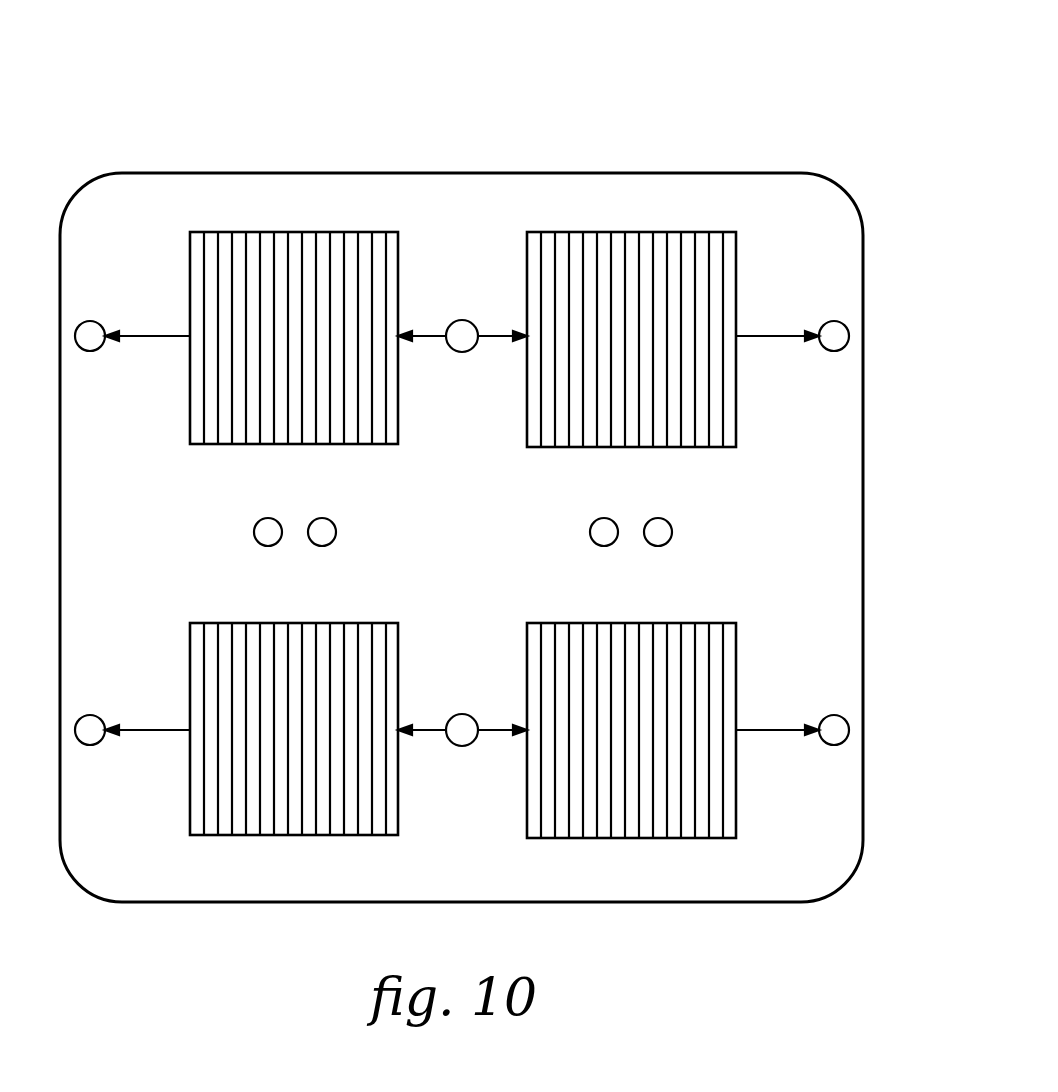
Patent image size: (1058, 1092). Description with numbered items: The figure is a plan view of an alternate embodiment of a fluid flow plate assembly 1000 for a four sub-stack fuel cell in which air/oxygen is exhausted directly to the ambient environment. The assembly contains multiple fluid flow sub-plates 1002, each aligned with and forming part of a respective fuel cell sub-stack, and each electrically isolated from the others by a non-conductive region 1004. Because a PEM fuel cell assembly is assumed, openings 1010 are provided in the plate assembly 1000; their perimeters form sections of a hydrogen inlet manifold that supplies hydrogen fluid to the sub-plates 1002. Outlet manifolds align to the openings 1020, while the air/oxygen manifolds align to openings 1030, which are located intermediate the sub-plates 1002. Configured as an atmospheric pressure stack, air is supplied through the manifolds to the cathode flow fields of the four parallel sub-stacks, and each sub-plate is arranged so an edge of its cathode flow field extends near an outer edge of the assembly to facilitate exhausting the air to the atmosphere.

The fluid flow plate assembly 1000 is at (302, 120).
The fluid flow sub-plate 1002 is at (463, 535).
The non-conductive region 1004 is at (832, 482).
The opening 1010 is at (462, 320).
The opening 1020 is at (91, 318).
The opening 1030 is at (309, 542).